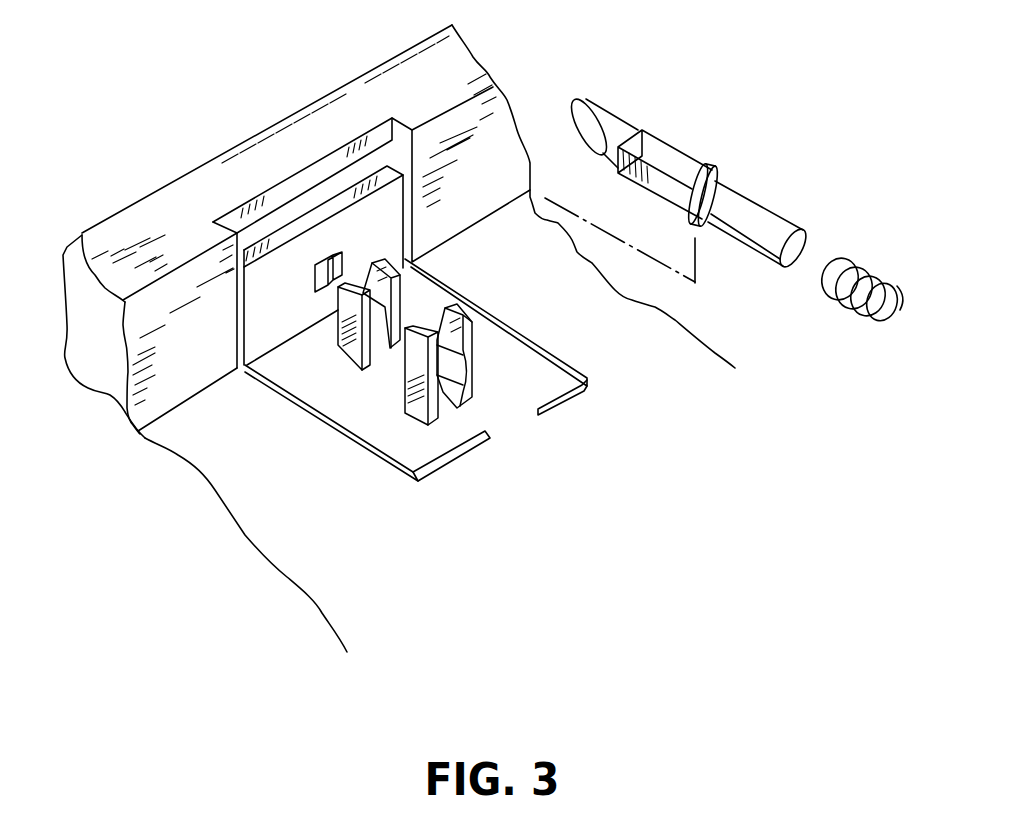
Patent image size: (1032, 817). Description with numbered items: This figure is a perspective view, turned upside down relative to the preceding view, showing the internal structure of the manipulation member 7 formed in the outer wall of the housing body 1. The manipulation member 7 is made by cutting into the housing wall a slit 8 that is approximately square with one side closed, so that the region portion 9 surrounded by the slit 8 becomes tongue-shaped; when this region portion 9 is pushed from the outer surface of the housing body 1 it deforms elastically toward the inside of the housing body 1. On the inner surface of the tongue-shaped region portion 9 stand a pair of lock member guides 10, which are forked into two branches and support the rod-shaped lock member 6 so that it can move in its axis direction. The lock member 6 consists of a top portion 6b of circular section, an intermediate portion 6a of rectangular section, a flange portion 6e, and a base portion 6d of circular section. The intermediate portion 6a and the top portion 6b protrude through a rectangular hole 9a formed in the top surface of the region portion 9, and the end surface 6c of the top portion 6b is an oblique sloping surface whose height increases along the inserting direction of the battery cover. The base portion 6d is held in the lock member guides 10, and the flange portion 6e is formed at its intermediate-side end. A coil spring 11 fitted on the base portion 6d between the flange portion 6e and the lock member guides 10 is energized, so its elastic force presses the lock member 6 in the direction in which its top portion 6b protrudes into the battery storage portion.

The housing body 1 is at (322, 613).
The lock member 6 is at (702, 141).
The intermediate portion 6a is at (678, 163).
The top portion 6b is at (618, 128).
The end surface 6c is at (583, 121).
The base portion 6d is at (768, 217).
The flange portion 6e is at (720, 177).
The manipulation member 7 is at (493, 463).
The slit 8 is at (567, 398).
The region portion 9 is at (415, 442).
The rectangular hole 9a is at (325, 266).
The lock member guides 10 is at (343, 357).
The coil spring 11 is at (849, 311).